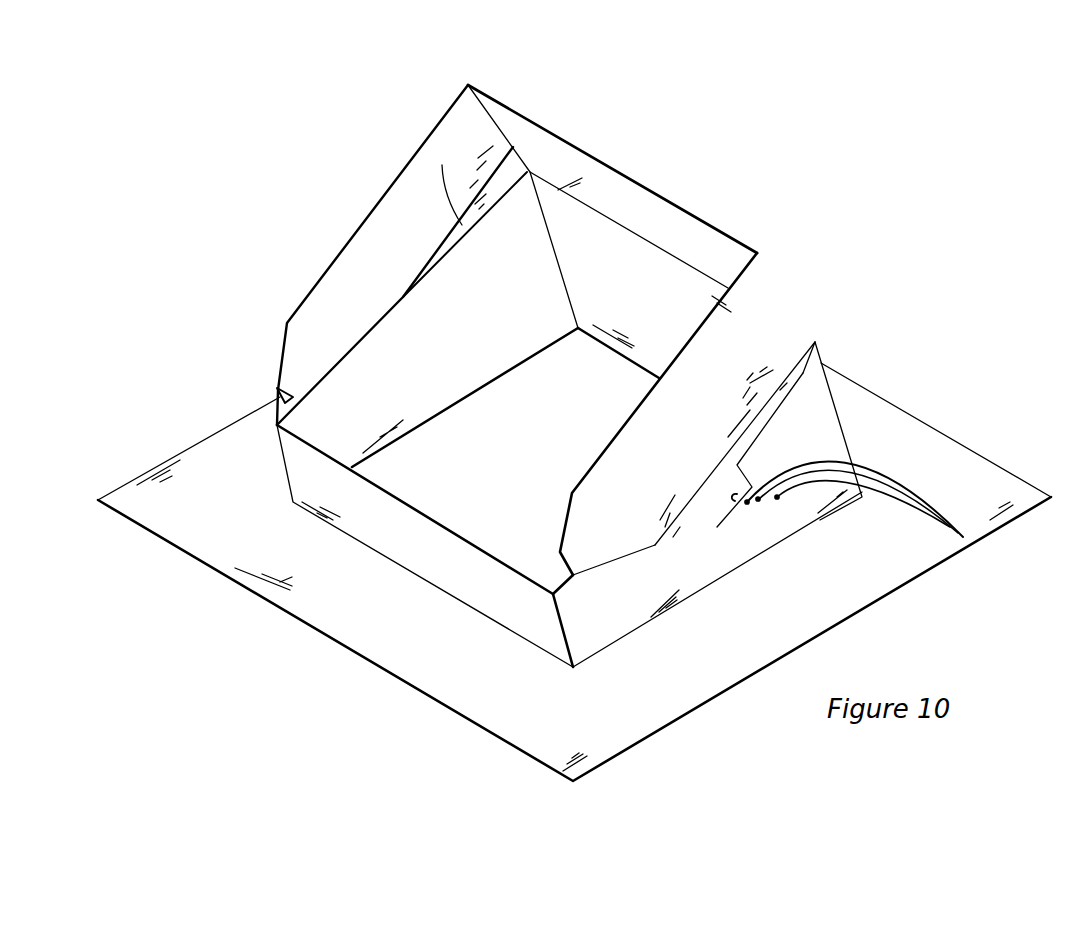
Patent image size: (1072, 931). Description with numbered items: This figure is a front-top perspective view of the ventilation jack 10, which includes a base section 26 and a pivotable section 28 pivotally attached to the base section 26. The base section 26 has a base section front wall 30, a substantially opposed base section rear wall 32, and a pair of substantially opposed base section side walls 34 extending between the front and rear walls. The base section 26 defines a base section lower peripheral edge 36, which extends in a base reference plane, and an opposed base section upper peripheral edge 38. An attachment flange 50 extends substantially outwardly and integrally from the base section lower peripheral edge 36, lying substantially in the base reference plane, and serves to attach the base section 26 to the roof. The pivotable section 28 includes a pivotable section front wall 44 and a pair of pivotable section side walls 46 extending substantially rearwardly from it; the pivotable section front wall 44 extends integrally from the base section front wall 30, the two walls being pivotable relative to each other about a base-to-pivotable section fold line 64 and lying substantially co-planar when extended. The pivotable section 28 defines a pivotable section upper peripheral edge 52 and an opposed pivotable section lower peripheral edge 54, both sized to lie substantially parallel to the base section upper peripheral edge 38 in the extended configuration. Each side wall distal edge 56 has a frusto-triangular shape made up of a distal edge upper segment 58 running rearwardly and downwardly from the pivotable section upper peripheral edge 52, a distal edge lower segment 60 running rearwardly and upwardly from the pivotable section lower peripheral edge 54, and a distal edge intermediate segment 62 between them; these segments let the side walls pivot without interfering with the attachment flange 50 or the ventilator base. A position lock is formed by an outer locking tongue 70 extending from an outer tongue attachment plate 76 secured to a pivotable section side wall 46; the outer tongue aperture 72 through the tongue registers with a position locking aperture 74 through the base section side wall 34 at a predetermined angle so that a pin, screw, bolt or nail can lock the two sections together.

The jack 10 is at (897, 140).
The base section 26 is at (862, 414).
The pivotable section 28 is at (797, 272).
The base section front wall 30 is at (616, 326).
The base section rear wall 32 is at (480, 595).
The base section side walls 34 is at (350, 377).
The base section lower peripheral edge 36 is at (712, 503).
The base section upper peripheral edge 38 is at (437, 260).
The pivotable section front wall 44 is at (604, 190).
The pivotable section side walls 46 is at (417, 178).
The attachment flange 50 is at (913, 463).
The pivotable section upper peripheral edge 52 is at (547, 128).
The pivotable section lower peripheral edge 54 is at (715, 503).
The side wall distal edge 56 is at (584, 586).
The distal edge upper segment 58 is at (564, 534).
The distal edge lower segment 60 is at (650, 550).
The distal edge intermediate segment 62 is at (571, 568).
The base-to-pivotable section fold line 64 is at (693, 262).
The outer locking tongue 70 is at (733, 503).
The outer tongue aperture 72 is at (813, 525).
The position locking aperture 74 is at (963, 540).
The outer tongue attachment plate 76 is at (442, 165).